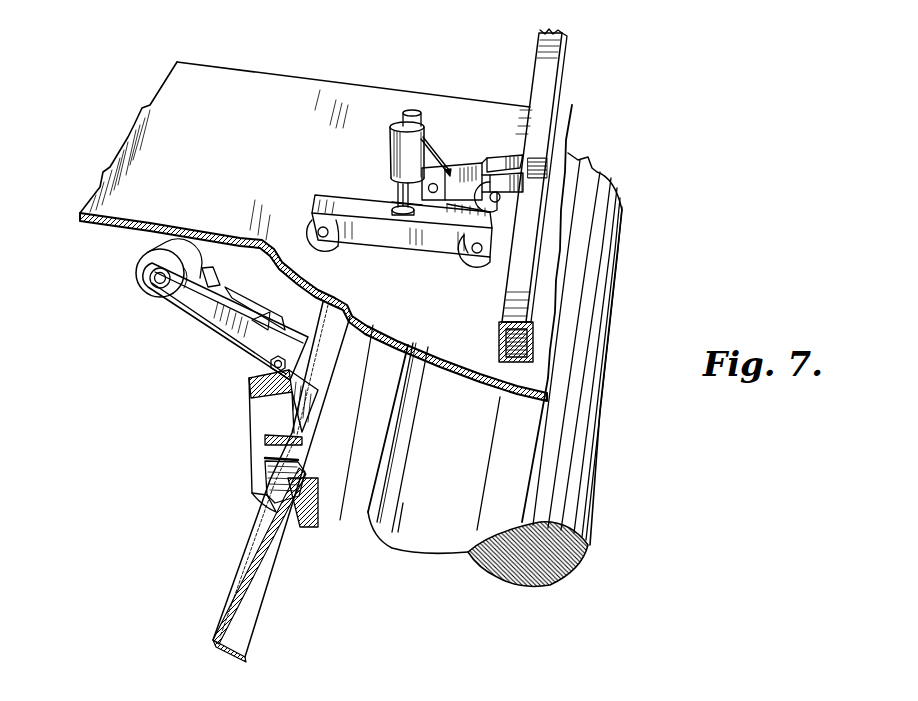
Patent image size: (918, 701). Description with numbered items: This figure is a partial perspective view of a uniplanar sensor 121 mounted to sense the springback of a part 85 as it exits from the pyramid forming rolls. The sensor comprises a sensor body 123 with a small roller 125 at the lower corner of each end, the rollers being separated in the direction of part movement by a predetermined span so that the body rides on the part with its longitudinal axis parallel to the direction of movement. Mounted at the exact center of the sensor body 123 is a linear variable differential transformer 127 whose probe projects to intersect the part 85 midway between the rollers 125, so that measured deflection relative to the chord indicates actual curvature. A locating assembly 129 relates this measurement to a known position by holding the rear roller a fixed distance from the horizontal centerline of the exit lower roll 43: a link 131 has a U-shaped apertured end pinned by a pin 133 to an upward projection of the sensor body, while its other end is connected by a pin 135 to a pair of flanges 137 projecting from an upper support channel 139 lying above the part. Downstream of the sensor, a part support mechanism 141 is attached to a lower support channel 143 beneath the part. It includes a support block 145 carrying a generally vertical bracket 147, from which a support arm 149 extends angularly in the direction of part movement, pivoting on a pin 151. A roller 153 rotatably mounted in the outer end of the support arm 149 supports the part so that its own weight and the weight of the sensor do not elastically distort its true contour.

The exit lower roll 43 is at (582, 460).
The part 85 is at (478, 108).
The uniplanar sensor 121 is at (351, 168).
The sensor body 123 is at (403, 240).
The roller 125 is at (328, 247).
The linear variable differential transformer 127 is at (420, 137).
The locating assembly 129 is at (497, 146).
The link 131 is at (479, 168).
The pin 133 is at (436, 184).
The pin 135 is at (502, 199).
The flanges 137 is at (507, 158).
The upper support channel 139 is at (552, 60).
The part support mechanism 141 is at (238, 372).
The lower support channel 143 is at (240, 573).
The support block 145 is at (273, 483).
The bracket 147 is at (262, 420).
The support arm 149 is at (220, 336).
The pin 151 is at (250, 388).
The roller 153 is at (142, 260).